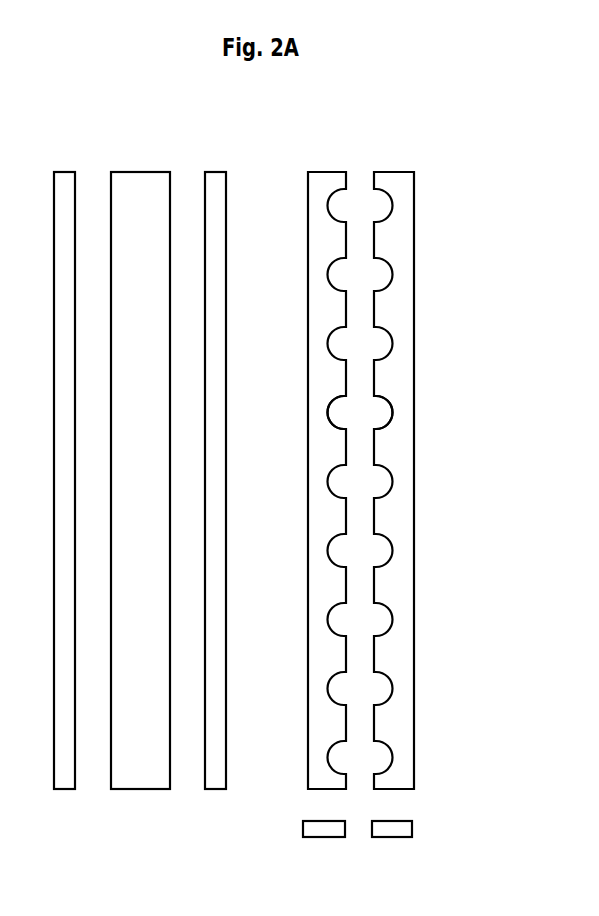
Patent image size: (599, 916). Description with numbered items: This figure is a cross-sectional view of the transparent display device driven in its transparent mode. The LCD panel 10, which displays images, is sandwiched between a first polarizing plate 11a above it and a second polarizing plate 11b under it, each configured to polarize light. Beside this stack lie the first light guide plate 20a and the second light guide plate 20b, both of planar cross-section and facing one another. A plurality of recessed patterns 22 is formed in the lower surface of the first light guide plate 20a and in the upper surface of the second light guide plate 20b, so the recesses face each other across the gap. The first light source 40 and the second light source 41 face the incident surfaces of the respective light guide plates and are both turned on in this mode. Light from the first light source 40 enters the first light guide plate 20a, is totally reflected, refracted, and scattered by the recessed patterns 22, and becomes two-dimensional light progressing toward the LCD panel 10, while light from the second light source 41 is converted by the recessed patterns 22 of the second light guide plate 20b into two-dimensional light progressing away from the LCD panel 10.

The LCD panel 10 is at (143, 171).
The first polarizing plate 11a is at (67, 171).
The second polarizing plate 11b is at (220, 171).
The first light guide plate 20a is at (330, 171).
The second light guide plate 20b is at (397, 171).
The recessed patterns 22 is at (328, 413).
The first light source 40 is at (303, 827).
The second light source 41 is at (412, 829).